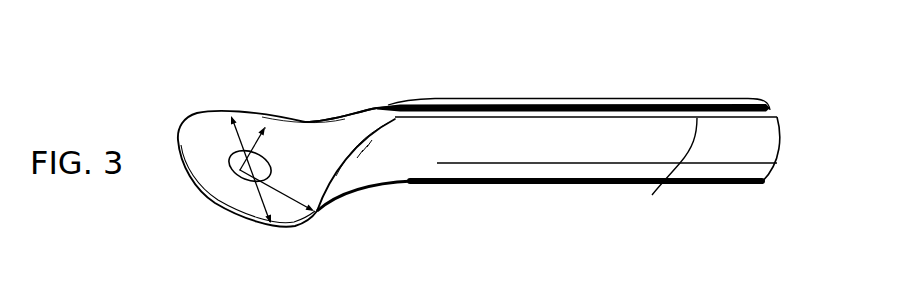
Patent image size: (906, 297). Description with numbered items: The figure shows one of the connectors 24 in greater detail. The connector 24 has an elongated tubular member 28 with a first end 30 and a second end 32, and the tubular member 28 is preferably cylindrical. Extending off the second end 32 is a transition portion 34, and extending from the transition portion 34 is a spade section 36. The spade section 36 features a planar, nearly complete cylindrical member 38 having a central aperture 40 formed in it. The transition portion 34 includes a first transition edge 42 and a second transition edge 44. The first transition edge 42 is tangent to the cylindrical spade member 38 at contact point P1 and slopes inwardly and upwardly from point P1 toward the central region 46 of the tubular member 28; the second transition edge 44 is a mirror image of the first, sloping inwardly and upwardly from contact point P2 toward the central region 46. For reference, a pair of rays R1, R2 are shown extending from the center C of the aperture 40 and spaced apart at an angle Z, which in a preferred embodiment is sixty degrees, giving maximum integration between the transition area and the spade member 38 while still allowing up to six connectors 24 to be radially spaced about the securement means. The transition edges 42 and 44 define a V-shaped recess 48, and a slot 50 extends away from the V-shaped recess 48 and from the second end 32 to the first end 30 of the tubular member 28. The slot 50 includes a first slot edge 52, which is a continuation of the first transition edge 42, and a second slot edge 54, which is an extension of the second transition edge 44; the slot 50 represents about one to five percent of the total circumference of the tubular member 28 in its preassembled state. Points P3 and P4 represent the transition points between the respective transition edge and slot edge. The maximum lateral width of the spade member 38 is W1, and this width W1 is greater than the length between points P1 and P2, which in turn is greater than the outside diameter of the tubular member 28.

The connector 24 is at (723, 186).
The elongated tubular member 28 is at (539, 174).
The first end 30 is at (782, 142).
The second end 32 is at (399, 166).
The transition portion 34 is at (355, 186).
The spade section 36 is at (247, 215).
The cylindrical member 38 is at (195, 138).
The central aperture 40 is at (238, 170).
The first transition edge 42 is at (333, 117).
The second transition edge 44 is at (362, 158).
The central region 46 is at (400, 112).
The V-shaped recess 48 is at (343, 152).
The slot 50 is at (503, 116).
The first slot edge 52 is at (630, 101).
The second slot edge 54 is at (652, 195).
The center C is at (240, 170).
The maximum lateral width W1 is at (231, 127).
The ray R1 is at (263, 127).
The ray R2 is at (282, 196).
The contact point P1 is at (267, 128).
The contact point P2 is at (318, 213).
The transition point P3 is at (380, 109).
The transition point P4 is at (395, 119).
The angle Z is at (270, 144).